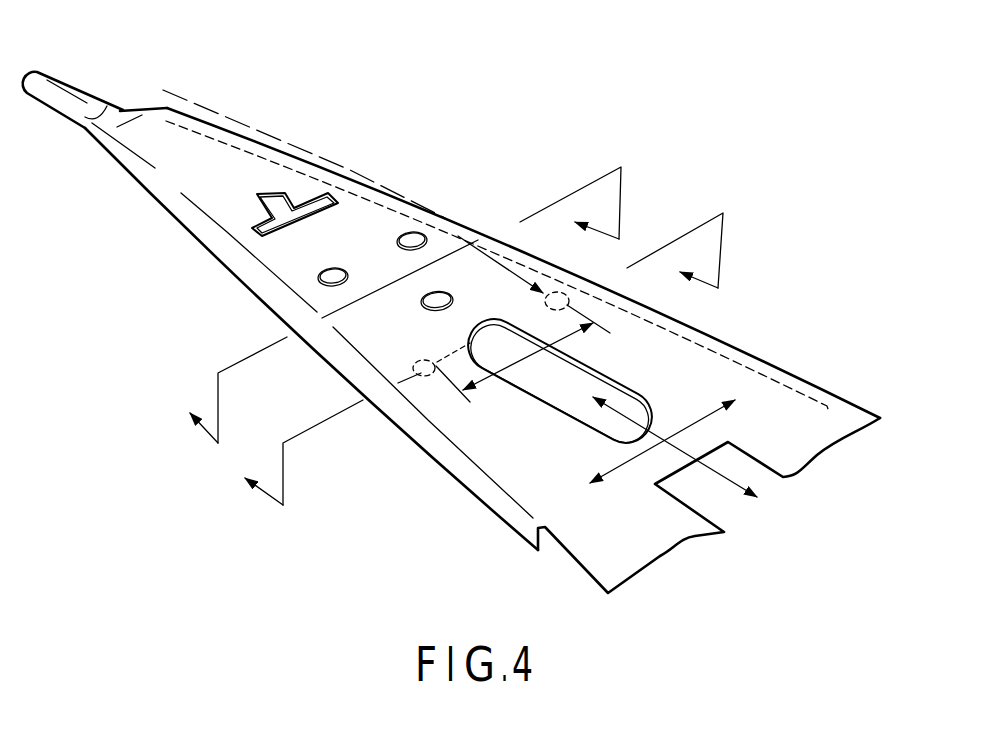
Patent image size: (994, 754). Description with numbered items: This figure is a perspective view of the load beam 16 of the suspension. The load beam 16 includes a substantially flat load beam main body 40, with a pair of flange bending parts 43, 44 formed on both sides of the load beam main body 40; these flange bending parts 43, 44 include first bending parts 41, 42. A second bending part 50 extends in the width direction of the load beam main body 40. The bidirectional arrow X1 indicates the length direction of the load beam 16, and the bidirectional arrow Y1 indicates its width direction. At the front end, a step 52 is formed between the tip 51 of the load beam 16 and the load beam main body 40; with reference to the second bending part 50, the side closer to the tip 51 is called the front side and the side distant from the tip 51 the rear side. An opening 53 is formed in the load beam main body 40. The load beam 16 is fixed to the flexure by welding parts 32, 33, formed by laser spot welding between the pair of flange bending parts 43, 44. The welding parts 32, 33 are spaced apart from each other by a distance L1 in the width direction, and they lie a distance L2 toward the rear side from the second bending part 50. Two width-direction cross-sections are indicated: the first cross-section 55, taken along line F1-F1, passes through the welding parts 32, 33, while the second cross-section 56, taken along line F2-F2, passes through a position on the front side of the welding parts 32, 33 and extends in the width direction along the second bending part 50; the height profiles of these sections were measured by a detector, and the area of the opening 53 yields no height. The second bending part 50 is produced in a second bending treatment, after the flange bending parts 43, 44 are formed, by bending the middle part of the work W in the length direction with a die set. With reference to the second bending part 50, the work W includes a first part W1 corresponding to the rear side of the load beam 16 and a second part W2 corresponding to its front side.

The load beam 16 is at (479, 139).
The welding part 32 is at (423, 378).
The welding part 33 is at (567, 293).
The load beam main body 40 is at (527, 480).
The first bending part 41 is at (350, 347).
The first bending part 42 is at (697, 332).
The flange bending part 43 is at (260, 280).
The flange bending part 44 is at (752, 363).
The second bending part 50 is at (432, 252).
The tip 51 is at (67, 75).
The step 52 is at (123, 108).
The opening 53 is at (540, 390).
The first cross-section 55 is at (448, 354).
The second cross-section 56 is at (383, 283).
The work W is at (674, 556).
The first part W1 is at (780, 405).
The second part W2 is at (360, 210).
The bidirectional arrow X1 is at (718, 476).
The bidirectional arrow Y1 is at (697, 422).
The distance L1 is at (533, 360).
The distance L2 is at (497, 266).
The line F1- F1 is at (477, 359).
The line F2- F2 is at (392, 305).